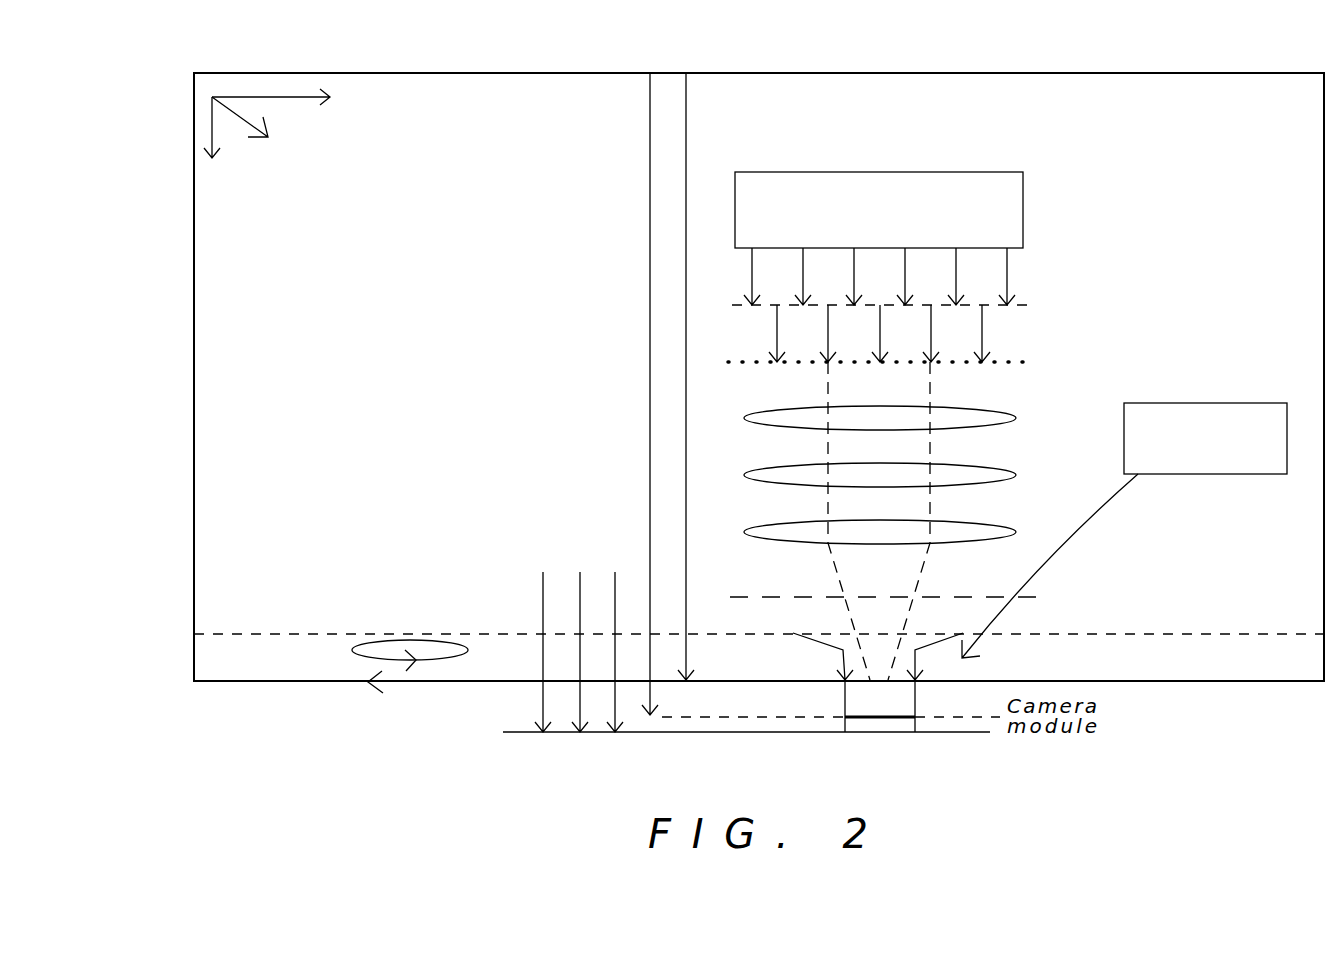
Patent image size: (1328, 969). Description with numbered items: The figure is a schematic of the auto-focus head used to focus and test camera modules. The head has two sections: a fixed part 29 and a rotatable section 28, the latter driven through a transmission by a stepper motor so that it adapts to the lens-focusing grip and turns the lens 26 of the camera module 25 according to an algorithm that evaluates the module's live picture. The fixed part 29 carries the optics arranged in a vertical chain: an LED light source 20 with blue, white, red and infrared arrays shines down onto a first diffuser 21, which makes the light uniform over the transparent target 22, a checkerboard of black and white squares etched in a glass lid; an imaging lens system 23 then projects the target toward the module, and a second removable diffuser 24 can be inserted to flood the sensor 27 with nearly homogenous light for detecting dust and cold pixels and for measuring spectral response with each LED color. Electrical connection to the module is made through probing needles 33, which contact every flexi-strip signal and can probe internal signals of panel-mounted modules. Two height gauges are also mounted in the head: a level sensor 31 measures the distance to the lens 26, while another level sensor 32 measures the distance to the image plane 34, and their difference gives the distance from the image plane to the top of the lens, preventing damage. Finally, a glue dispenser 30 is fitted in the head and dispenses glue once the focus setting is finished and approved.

The light source 20 is at (1023, 207).
The first diffuser 21 is at (1023, 286).
The transparent target 22 is at (1008, 338).
The imaging lens system 23 is at (1028, 402).
The second removable diffuser 24 is at (1063, 597).
The camera module 25 is at (908, 732).
The lens 26 is at (902, 681).
The sensor 27 is at (870, 720).
The rotatable section 28 is at (340, 662).
The fixed part 29 is at (215, 538).
The glue dispenser 30 is at (1264, 474).
The level sensor 31 is at (686, 104).
The level sensor 32 is at (650, 104).
The probing needles 33 is at (543, 613).
The image plane 34 is at (803, 717).